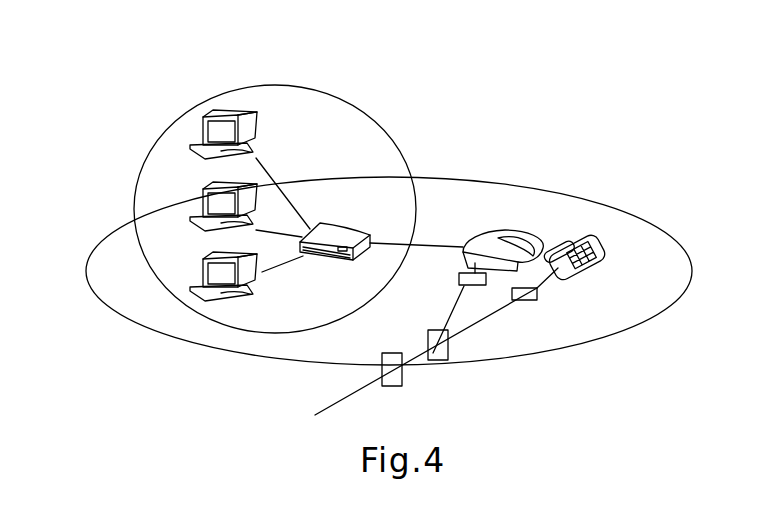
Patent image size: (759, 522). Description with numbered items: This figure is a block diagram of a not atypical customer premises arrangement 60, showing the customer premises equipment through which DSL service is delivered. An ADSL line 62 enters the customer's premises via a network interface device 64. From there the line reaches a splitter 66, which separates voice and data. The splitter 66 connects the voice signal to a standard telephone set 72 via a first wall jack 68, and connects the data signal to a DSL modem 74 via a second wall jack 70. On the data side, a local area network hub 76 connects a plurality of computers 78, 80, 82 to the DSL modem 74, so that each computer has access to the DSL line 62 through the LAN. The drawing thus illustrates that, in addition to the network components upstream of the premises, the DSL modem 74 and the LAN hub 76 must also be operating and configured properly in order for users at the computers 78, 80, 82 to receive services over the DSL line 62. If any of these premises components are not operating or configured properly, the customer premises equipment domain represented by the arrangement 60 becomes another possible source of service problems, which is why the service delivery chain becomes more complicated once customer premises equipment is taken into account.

The customer premises arrangement 60 is at (399, 120).
The ADSL line 62 is at (337, 403).
The network interface device 64 is at (403, 380).
The splitter 66 is at (448, 345).
The first wall jack 68 is at (540, 300).
The second wall jack 70 is at (464, 287).
The standard telephone set 72 is at (607, 244).
The DSL modem 74 is at (502, 231).
The local area network hub 76 is at (401, 161).
The computer 78 is at (243, 110).
The computer 80 is at (203, 204).
The computer 82 is at (203, 279).